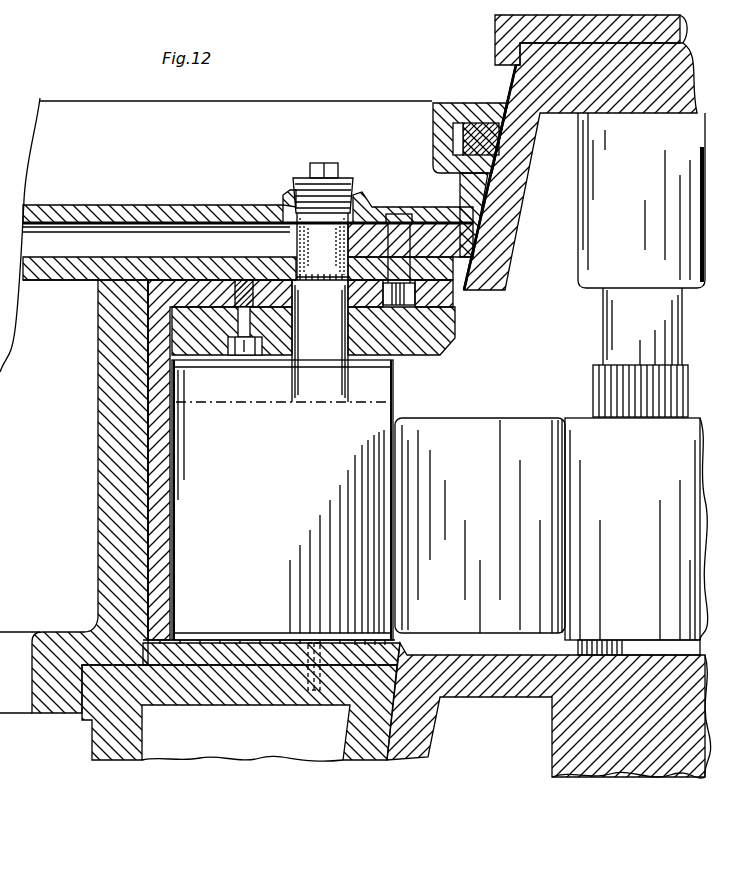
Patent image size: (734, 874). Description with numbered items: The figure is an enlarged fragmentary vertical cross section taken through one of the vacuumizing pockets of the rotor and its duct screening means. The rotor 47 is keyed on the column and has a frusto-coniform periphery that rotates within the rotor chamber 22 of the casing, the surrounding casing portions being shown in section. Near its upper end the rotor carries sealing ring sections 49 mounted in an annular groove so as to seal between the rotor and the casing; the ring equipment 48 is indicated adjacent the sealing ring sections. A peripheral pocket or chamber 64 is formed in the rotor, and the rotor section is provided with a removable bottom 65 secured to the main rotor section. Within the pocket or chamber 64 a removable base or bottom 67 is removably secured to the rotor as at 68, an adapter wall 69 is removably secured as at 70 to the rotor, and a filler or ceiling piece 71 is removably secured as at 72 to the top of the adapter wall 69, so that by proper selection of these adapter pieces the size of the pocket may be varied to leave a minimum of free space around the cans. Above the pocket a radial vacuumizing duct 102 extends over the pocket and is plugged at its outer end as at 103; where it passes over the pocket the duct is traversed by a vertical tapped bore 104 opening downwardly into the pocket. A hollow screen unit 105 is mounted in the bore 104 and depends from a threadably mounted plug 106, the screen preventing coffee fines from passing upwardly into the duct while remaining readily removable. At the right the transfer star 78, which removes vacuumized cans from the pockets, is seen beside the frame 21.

The frame 21 is at (505, 232).
The rotor chamber 22 is at (498, 194).
The rotor 47 is at (126, 407).
The packing 48 is at (458, 136).
The sealing ring sections 49 is at (458, 151).
The peripheral pocket or chamber 64 is at (146, 468).
The removable bottom 65 is at (106, 733).
The removable base or bottom 67 is at (195, 652).
The securing means for base 68 is at (310, 648).
The adapter wall 69 is at (182, 298).
The securing means for adapter wall 70 is at (418, 298).
The filler or ceiling piece 71 is at (284, 342).
The securing means for ceiling piece 72 is at (250, 343).
The transfer star 78 is at (466, 436).
The radial vacuumizing duct 102 is at (118, 233).
The plug 103 is at (445, 242).
The vertical tapped bore 104 is at (294, 272).
The hollow screen unit 105 is at (291, 208).
The threadably mounted plug 106 is at (340, 186).